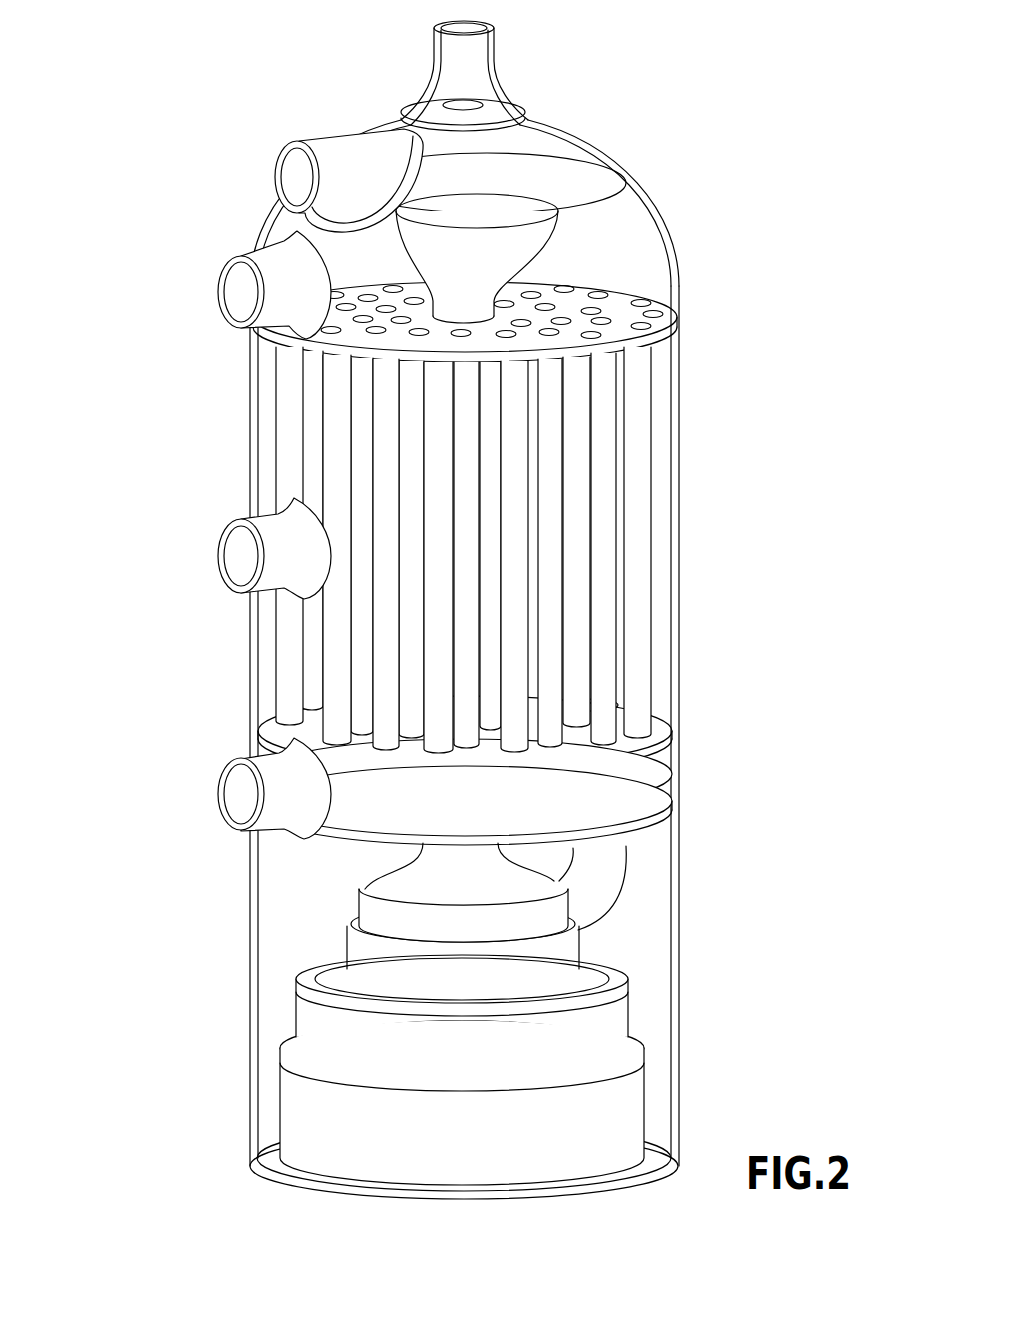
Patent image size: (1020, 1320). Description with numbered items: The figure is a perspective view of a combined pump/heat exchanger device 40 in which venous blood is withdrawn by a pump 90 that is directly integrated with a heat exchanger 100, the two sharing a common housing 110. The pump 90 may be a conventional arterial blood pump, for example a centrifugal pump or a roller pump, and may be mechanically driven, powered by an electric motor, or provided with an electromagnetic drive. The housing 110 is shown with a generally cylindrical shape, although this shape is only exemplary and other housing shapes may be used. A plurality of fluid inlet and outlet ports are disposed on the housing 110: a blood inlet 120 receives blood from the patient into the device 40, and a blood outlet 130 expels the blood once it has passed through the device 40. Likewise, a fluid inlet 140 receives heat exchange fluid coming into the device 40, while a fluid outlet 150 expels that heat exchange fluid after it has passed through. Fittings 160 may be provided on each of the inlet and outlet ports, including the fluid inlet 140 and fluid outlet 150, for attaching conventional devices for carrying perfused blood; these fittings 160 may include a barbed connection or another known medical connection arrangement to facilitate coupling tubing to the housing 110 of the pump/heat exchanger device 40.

The combined pump/heat exchanger device 40 is at (790, 122).
The pump 90 is at (585, 937).
The heat exchanger 100 is at (663, 443).
The housing 110 is at (658, 203).
The blood inlet 120 is at (280, 181).
The blood outlet 130 is at (238, 557).
The fluid inlet 140 is at (238, 293).
The fluid outlet 150 is at (240, 793).
The fittings 160 is at (494, 50).